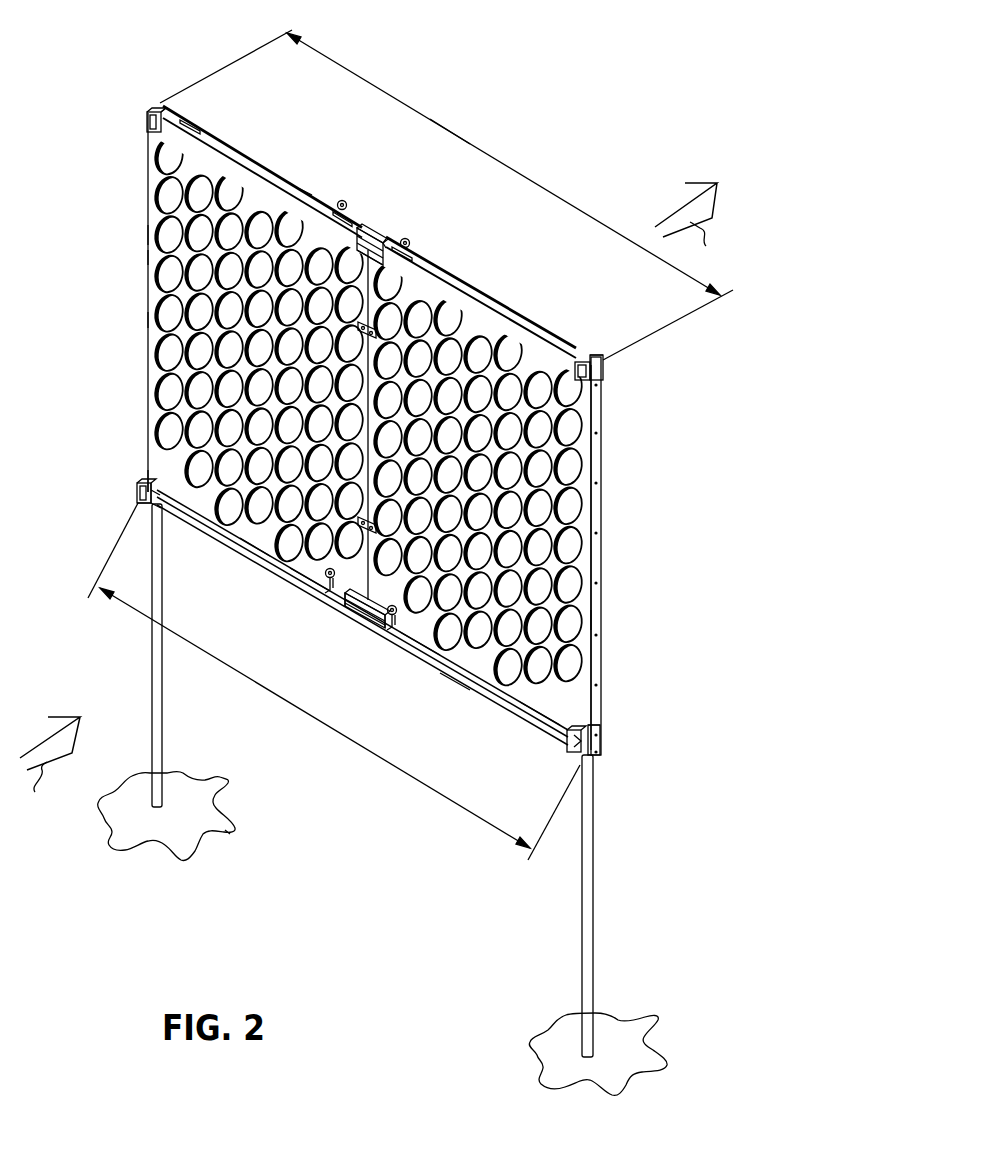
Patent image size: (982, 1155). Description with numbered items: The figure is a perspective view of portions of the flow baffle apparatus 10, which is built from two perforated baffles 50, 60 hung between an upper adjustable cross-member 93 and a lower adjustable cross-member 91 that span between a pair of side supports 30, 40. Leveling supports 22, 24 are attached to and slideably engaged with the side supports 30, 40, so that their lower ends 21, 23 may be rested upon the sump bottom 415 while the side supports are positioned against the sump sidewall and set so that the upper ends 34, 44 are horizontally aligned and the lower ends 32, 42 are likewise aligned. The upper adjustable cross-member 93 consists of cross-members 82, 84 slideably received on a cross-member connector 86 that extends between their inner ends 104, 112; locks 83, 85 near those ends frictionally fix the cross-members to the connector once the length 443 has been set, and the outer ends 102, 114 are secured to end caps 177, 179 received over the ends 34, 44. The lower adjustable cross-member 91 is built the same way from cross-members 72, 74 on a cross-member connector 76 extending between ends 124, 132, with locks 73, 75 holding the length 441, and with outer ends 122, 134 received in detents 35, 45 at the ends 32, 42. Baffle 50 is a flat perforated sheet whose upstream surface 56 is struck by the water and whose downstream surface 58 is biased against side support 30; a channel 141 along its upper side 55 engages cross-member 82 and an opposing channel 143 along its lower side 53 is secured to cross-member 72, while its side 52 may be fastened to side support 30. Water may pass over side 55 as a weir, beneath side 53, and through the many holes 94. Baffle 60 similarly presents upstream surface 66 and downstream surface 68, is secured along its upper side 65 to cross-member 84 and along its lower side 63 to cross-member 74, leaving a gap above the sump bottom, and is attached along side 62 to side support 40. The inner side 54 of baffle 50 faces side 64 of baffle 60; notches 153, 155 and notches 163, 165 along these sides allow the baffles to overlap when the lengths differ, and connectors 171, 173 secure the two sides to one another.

The flow baffle apparatus 10 is at (594, 138).
The end of leveling support 21 is at (165, 805).
The leveling support 22 is at (162, 710).
The end of leveling support 23 is at (593, 1055).
The leveling support 24 is at (580, 845).
The side support 30 is at (368, 408).
The end of side support 32 is at (137, 492).
The end of side support 34 is at (147, 118).
The detent 35 is at (137, 480).
The side support 40 is at (603, 530).
The end of side support 42 is at (602, 740).
The end of side support 44 is at (603, 370).
The detent 45 is at (570, 748).
The baffle 50 is at (175, 465).
The side of baffle 52 is at (147, 318).
The side of baffle 53 is at (150, 507).
The side of baffle 54 is at (327, 445).
The side of baffle 55 is at (285, 185).
The surface of baffle 56 is at (157, 235).
The surface of baffle 58 is at (147, 255).
The baffle 60 is at (570, 703).
The side of baffle 62 is at (602, 406).
The side of baffle 63 is at (540, 705).
The side of baffle 64 is at (395, 283).
The side of baffle 65 is at (503, 307).
The surface of baffle 66 is at (584, 624).
The surface of baffle 68 is at (603, 583).
The cross-member 72 is at (262, 553).
The lock 73 is at (330, 585).
The cross-member 74 is at (446, 658).
The lock 75 is at (392, 620).
The cross-member connector 76 is at (360, 618).
The cross-member 82 is at (245, 150).
The lock 83 is at (346, 200).
The cross-member 84 is at (545, 330).
The lock 85 is at (410, 240).
The cross-member connector 86 is at (387, 237).
The adjustable cross-member 91 is at (462, 690).
The adjustable cross-member 93 is at (313, 190).
The holes 94 is at (222, 492).
The end of cross-member 102 is at (185, 110).
The end of cross-member 104 is at (390, 243).
The end of cross-member 112 is at (387, 226).
The end of cross-member 114 is at (605, 357).
The end of cross-member 122 is at (140, 500).
The end of cross-member 124 is at (352, 606).
The end of cross-member 132 is at (384, 630).
The end of cross-member 134 is at (600, 728).
The channel 141 is at (320, 95).
The channel 143 is at (260, 507).
The notch 153 is at (380, 598).
The notch 155 is at (365, 248).
The notch 163 is at (385, 610).
The notch 165 is at (362, 272).
The connector 171 is at (372, 520).
The connector 173 is at (375, 330).
The end cap 177 is at (150, 108).
The end cap 179 is at (603, 365).
The sump bottom 415 is at (228, 832).
The length 441 is at (338, 734).
The length 443 is at (458, 132).